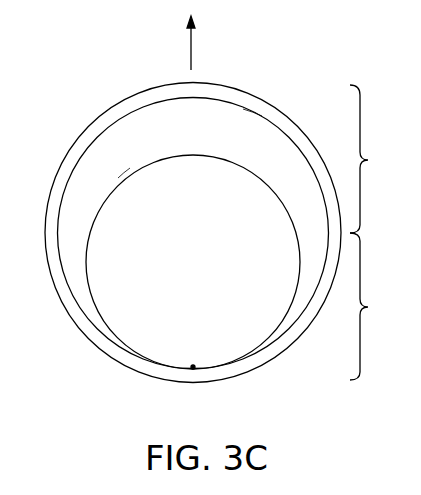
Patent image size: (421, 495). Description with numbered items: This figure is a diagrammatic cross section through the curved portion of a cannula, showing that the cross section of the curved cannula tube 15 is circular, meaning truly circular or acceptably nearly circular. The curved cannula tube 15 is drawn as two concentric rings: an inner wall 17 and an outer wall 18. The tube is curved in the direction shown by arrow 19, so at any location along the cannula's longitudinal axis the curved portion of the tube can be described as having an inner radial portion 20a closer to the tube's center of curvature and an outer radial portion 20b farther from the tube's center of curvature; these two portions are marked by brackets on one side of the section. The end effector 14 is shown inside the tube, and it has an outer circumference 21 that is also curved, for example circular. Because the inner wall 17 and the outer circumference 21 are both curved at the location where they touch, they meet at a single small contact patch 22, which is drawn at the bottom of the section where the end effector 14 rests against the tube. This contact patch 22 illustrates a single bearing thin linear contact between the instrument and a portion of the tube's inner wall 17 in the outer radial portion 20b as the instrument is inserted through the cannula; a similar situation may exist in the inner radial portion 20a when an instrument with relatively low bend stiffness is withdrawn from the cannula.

The surgical end effector 14 is at (172, 170).
The curved cannula tube 15 is at (234, 97).
The inner wall 17 is at (242, 110).
The outer wall 18 is at (288, 110).
The arrow 19 is at (193, 50).
The inner radial portion 20a is at (381, 159).
The outer radial portion 20b is at (381, 306).
The outer circumference 21 is at (122, 175).
The contact patch 22 is at (193, 368).